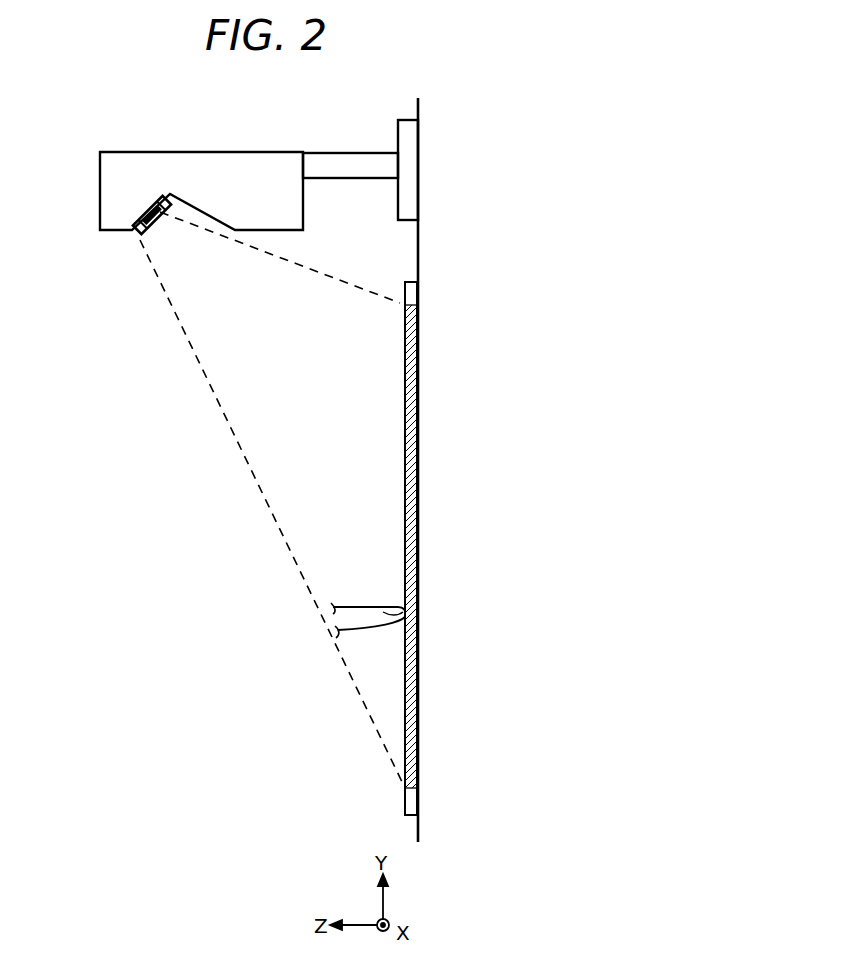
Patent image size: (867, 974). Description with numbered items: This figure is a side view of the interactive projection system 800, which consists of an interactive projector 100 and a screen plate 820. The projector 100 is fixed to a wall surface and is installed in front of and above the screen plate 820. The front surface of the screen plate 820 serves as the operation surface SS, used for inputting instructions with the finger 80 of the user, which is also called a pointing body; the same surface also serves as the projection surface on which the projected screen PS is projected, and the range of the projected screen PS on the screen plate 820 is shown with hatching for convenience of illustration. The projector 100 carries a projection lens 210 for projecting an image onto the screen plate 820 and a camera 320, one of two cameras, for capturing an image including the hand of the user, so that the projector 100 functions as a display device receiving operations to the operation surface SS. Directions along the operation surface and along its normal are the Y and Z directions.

The interactive projector 100 is at (250, 162).
The interactive projection system 800 is at (470, 172).
The screen plate 820 is at (412, 293).
The camera 320 is at (145, 212).
The projection lens 210 is at (139, 233).
The finger 80 is at (362, 605).